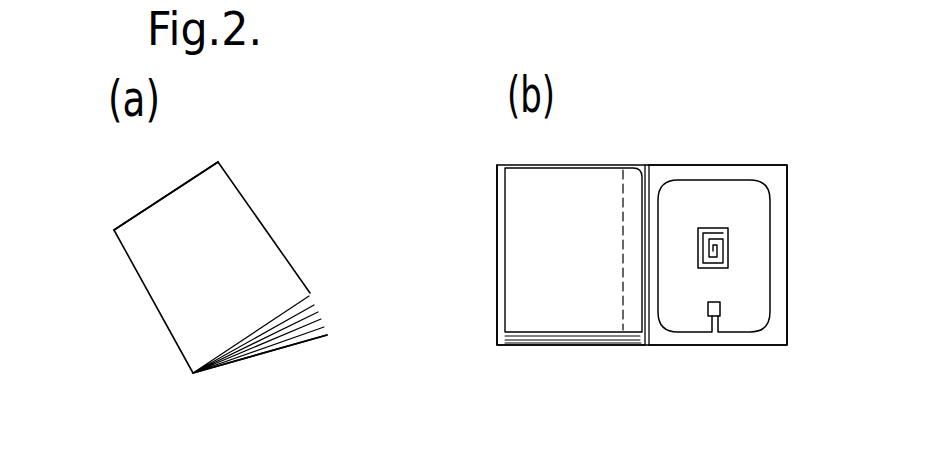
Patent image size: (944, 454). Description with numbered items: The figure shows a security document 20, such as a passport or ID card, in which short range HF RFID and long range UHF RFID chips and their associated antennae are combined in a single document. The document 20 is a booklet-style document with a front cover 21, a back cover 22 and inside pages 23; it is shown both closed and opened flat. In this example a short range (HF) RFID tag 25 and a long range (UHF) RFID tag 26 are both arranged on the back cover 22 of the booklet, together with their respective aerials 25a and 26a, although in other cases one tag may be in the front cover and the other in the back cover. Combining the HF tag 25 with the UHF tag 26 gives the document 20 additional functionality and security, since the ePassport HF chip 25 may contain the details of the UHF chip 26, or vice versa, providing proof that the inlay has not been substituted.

The document 20 is at (165, 280).
The front cover 21 is at (247, 202).
The back cover 22 is at (280, 350).
The inside pages 23 is at (310, 292).
The short range (HF) RFID tag 25 is at (720, 308).
The aerial 25a is at (772, 222).
The long range (UHF) RFID tag 26 is at (712, 250).
The aerial 26a is at (732, 251).